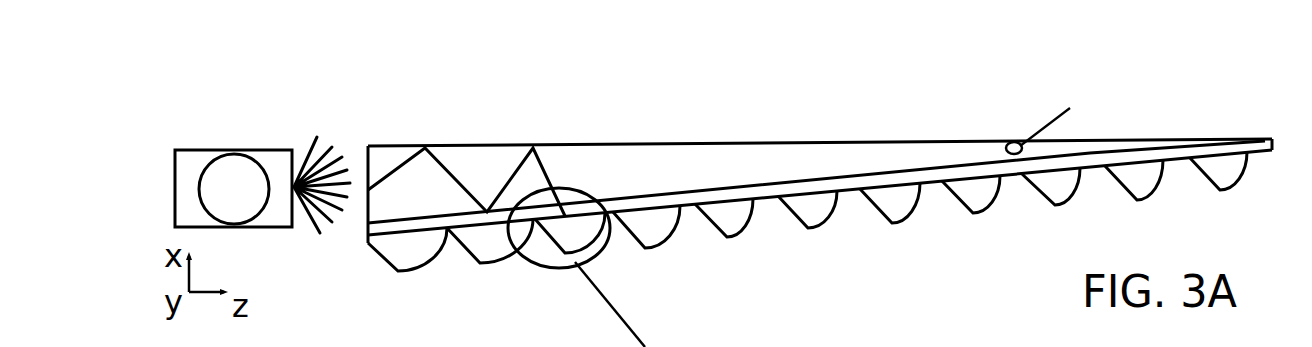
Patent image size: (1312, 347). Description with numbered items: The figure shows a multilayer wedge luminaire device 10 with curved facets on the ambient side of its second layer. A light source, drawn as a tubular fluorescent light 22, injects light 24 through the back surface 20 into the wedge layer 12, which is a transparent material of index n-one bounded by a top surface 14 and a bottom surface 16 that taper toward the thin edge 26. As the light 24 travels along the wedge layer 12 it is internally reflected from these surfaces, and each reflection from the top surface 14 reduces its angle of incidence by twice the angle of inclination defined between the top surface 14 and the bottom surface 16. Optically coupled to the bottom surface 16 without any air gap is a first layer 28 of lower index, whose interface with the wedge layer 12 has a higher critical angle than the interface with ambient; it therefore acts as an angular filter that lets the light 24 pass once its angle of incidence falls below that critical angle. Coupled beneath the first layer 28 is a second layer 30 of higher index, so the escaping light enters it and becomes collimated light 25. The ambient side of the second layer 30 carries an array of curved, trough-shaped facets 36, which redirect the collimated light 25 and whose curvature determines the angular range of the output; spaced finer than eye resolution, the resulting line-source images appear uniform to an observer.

The multilayer luminaire device 10 is at (807, 189).
The wedge layer 12 is at (820, 142).
The top surface 14 is at (846, 134).
The bottom surface 16 is at (706, 184).
The back surface 20 is at (358, 166).
The tubular fluorescent light 22 is at (250, 148).
The light 24 is at (452, 162).
The collimated light 25 is at (718, 346).
The edge 26 is at (1226, 130).
The first layer 28 is at (1135, 158).
The second layer 30 is at (807, 240).
The curved facets 36 is at (455, 259).